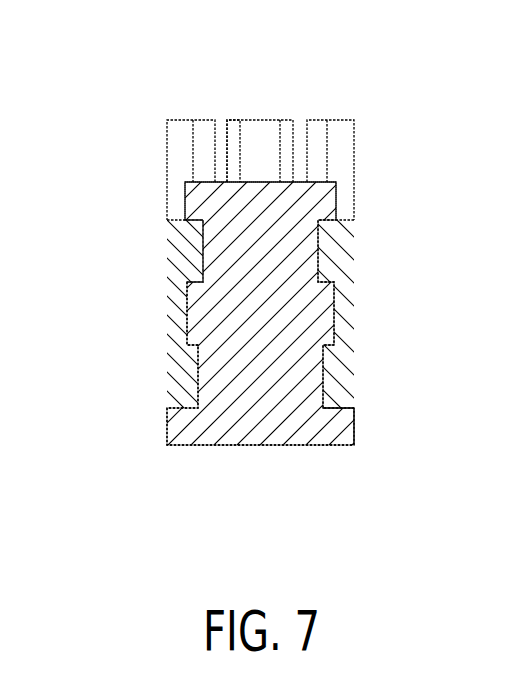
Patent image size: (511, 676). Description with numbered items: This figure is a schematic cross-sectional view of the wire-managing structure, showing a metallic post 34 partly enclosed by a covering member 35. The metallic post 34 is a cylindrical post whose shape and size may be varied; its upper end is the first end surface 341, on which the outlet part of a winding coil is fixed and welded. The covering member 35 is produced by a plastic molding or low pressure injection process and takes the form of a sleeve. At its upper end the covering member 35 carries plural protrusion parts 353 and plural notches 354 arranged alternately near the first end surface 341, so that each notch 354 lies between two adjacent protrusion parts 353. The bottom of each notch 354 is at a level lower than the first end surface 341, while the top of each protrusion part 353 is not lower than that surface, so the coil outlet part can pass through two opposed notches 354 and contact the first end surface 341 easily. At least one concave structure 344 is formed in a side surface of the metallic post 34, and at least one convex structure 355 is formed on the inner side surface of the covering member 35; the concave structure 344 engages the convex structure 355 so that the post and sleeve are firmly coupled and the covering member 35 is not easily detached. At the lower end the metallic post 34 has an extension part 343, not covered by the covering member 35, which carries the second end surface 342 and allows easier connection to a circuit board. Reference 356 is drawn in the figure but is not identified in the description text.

The metallic post 34 is at (283, 233).
The first end surface 341 is at (215, 182).
The second end surface 342 is at (203, 446).
The extension part 343 is at (355, 427).
The concave structure 344 is at (203, 250).
The convex structure 355 is at (187, 272).
The covering member 35 is at (340, 263).
The protrusion part 353 is at (180, 143).
The notch 354 is at (220, 145).
The tab 356 is at (240, 172).